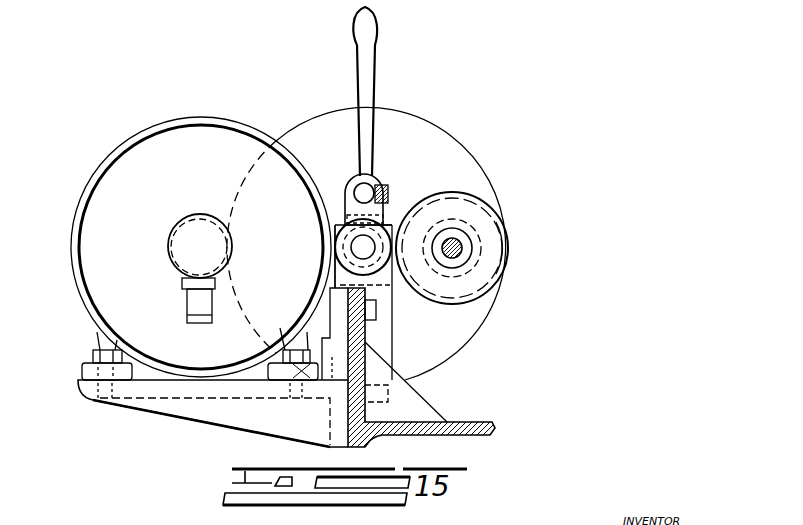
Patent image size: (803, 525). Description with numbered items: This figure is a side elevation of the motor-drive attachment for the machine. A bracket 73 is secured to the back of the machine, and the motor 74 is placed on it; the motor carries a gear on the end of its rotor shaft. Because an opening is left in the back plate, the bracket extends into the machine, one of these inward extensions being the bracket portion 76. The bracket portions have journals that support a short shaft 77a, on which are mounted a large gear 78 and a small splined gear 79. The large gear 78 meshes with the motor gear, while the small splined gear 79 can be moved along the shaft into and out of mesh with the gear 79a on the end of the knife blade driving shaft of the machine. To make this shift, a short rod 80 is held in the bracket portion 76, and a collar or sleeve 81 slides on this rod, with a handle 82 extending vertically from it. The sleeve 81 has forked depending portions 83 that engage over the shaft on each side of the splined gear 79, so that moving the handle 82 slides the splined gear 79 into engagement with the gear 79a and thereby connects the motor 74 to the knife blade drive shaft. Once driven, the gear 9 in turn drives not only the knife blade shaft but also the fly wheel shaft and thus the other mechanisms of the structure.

The gear 9 is at (455, 222).
The bracket 73 is at (245, 403).
The motor 74 is at (173, 145).
The bracket portion 76 is at (320, 271).
The short shaft 77a is at (364, 246).
The large gear 78 is at (402, 108).
The small splined gear 79 is at (393, 302).
The gear 79a is at (508, 237).
The short rod 80 is at (364, 193).
The collar or sleeve 81 is at (348, 181).
The handle 82 is at (373, 65).
The forked depending portions 83 is at (335, 223).